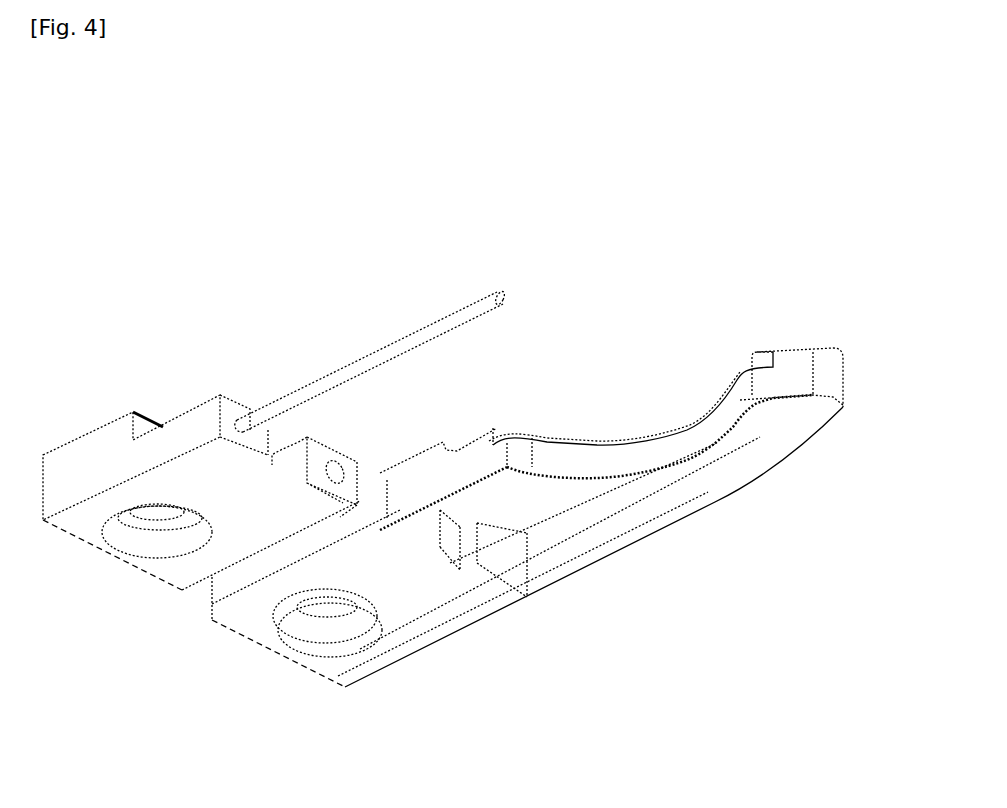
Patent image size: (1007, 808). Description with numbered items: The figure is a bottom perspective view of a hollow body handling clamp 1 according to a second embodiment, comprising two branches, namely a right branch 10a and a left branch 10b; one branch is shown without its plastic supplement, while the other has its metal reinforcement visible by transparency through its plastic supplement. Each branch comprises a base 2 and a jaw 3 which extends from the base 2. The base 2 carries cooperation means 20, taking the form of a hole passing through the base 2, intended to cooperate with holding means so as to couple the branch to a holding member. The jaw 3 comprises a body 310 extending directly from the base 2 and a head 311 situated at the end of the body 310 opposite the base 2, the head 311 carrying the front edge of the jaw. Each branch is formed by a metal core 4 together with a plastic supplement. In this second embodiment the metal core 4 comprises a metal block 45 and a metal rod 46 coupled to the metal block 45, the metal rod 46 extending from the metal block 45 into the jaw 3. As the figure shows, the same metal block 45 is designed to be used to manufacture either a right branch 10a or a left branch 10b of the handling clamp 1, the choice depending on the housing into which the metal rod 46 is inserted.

The handling clamp 1 is at (640, 212).
The base 2 is at (353, 700).
The jaw 3 is at (640, 556).
The body 310 is at (425, 677).
The head 311 is at (585, 590).
The metal core 4 is at (219, 378).
The right branch 10a is at (727, 306).
The left branch 10b is at (566, 270).
The cooperation means 20 is at (349, 653).
The metal block 45 is at (168, 583).
The metal rod 46 is at (363, 354).